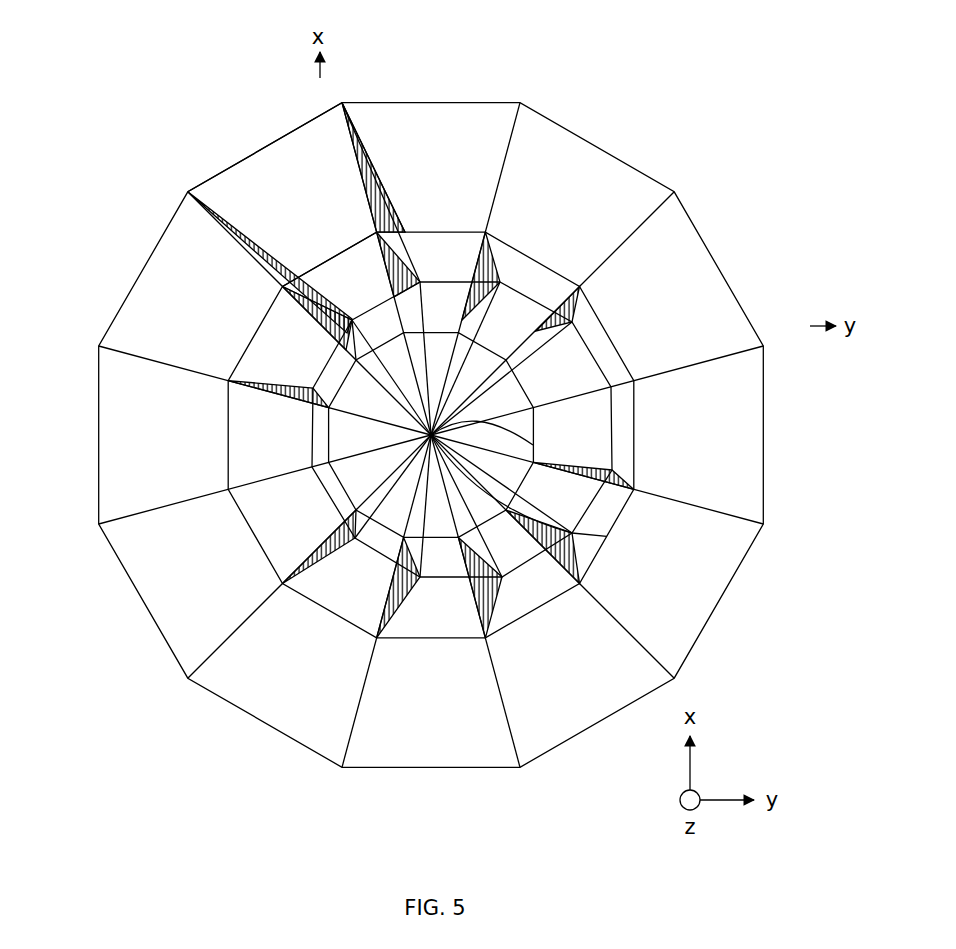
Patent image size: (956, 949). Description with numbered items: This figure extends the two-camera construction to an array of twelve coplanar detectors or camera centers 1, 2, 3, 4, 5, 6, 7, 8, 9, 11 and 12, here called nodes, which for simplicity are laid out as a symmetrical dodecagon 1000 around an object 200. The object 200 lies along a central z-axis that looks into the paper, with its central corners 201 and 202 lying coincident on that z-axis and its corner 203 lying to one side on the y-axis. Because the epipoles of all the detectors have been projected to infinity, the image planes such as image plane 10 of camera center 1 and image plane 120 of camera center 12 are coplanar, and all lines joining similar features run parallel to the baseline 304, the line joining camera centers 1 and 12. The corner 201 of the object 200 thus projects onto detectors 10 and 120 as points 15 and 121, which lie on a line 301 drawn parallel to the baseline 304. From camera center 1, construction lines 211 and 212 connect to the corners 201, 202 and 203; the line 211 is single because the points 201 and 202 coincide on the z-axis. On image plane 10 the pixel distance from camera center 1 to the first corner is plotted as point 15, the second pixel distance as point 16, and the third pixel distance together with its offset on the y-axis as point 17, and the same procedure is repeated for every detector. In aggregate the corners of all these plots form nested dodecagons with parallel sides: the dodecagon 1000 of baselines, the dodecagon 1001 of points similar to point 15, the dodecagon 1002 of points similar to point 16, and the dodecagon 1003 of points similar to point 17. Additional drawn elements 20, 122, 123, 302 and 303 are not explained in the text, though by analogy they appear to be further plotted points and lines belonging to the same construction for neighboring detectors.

The camera center 1 is at (342, 103).
The camera center 2 is at (520, 103).
The camera center 3 is at (674, 192).
The camera center 4 is at (763, 346).
The camera center 5 is at (763, 524).
The camera center 6 is at (674, 678).
The camera center 7 is at (520, 767).
The camera center 8 is at (342, 767).
The camera center 9 is at (188, 678).
The image plane 10 is at (99, 524).
The camera center 11 is at (99, 346).
The camera center 12 is at (188, 192).
The point 15 is at (383, 220).
The point 16 is at (425, 320).
The point 17 is at (422, 283).
The hinge plate 20 is at (498, 252).
The image plane 120 is at (315, 320).
The point 121 is at (280, 288).
The plate side edge 122 is at (347, 360).
The plate inner edge 123 is at (353, 318).
The object 200 is at (420, 420).
The corner 201 is at (607, 537).
The corner 202 is at (501, 484).
The corner 203 is at (533, 446).
The construction line 211 is at (360, 172).
The construction line 212 is at (366, 168).
The line 301 is at (322, 264).
The inner link 302 is at (380, 350).
The connecting segment 303 is at (375, 318).
The baseline 304 is at (265, 150).
The dodecagon 1000 is at (723, 274).
The nested dodecagon 1001 is at (604, 328).
The nested dodecagon 1002 is at (520, 384).
The nested dodecagon 1003 is at (592, 356).